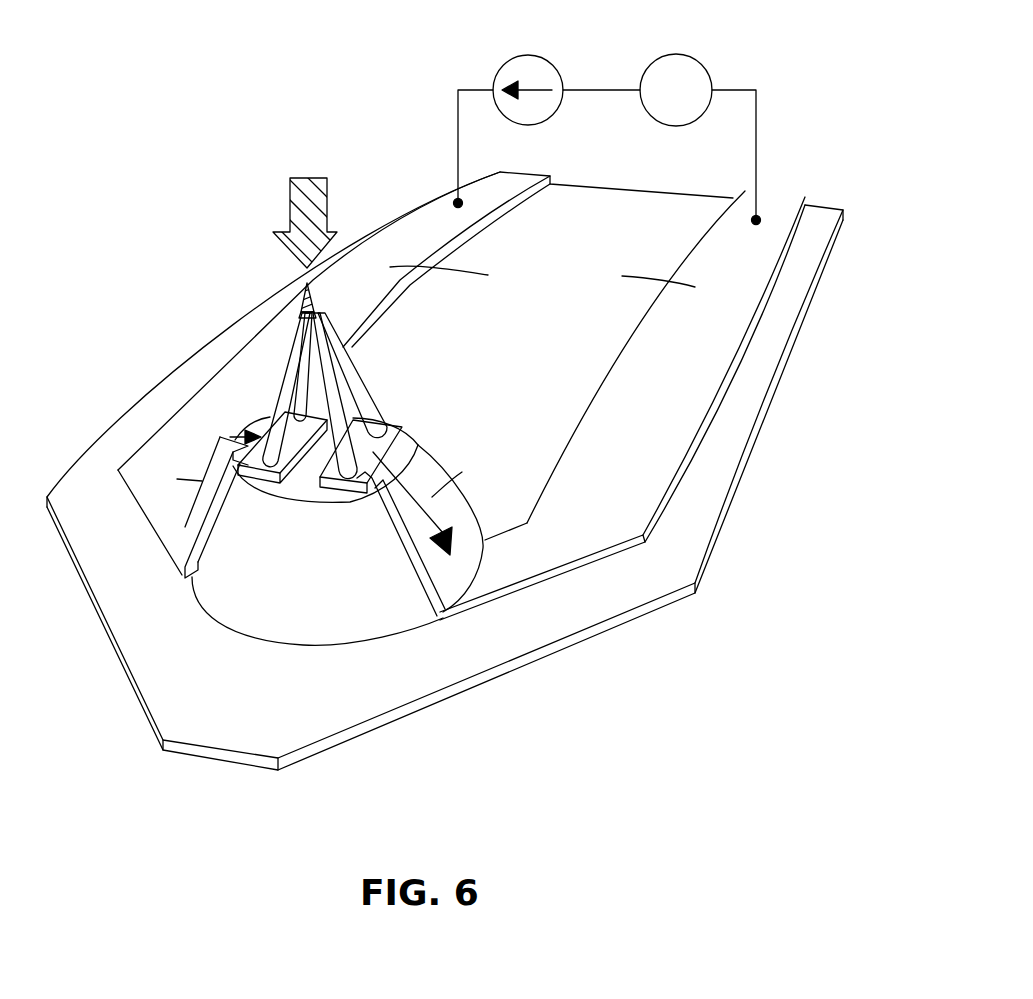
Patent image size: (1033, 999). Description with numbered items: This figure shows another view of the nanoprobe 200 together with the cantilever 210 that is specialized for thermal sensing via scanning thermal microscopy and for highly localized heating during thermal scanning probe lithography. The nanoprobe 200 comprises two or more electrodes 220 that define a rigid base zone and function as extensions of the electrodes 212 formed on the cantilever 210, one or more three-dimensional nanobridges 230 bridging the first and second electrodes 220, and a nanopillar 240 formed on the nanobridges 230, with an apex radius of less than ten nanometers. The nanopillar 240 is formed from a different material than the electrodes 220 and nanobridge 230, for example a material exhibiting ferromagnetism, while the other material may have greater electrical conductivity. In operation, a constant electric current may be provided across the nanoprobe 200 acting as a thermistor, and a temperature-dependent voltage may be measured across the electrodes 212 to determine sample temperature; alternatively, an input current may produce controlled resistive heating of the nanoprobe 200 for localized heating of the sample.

The nanoprobe 200 is at (102, 166).
The cantilever 210 is at (705, 458).
The electrodes 212 is at (675, 369).
The electrodes 220 is at (333, 395).
The 3D nanobridges 230 is at (303, 320).
The nanopillar 240 is at (303, 298).